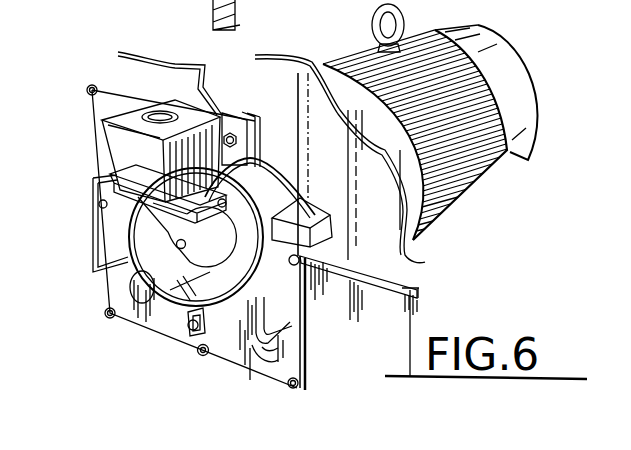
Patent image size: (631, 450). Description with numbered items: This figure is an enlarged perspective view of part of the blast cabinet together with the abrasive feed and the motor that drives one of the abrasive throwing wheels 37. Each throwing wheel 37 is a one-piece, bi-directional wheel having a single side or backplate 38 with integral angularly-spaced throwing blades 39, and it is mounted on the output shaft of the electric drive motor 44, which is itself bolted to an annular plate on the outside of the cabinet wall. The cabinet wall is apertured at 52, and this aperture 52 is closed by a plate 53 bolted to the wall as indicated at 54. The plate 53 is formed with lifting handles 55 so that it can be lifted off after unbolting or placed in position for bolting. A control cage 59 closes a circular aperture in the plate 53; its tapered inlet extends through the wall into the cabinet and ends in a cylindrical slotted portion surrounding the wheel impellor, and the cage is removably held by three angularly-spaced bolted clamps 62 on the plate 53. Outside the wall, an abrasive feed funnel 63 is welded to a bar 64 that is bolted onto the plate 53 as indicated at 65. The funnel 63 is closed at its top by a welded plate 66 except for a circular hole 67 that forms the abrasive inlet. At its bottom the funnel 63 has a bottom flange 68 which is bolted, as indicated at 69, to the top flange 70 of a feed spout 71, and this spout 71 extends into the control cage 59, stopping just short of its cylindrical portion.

The abrasive throwing wheel 37 is at (293, 150).
The backplate 38 is at (270, 193).
The throwing blades 39 is at (297, 232).
The electric drive motor 44 is at (503, 82).
The aperture 52 is at (317, 3).
The plate 53 is at (282, 403).
The bolts 54 is at (90, 89).
The lifting handles 55 is at (93, 222).
The control cage 59 is at (205, 290).
The bolted clamps 62 is at (193, 336).
The abrasive feed funnel 63 is at (113, 137).
The bar 64 is at (226, 113).
The bolts 65 is at (236, 135).
The welded plate 66 is at (128, 113).
The circular hole 67 is at (163, 111).
The bottom flange 68 is at (182, 188).
The bolts 69 is at (207, 197).
The top flange 70 is at (207, 237).
The feed spout 71 is at (168, 230).